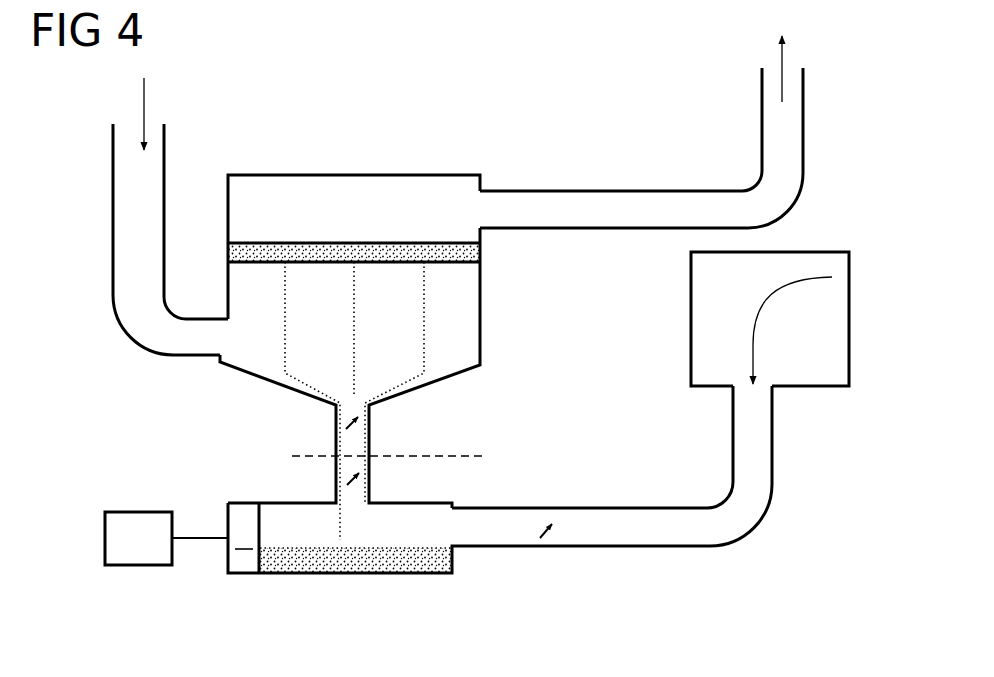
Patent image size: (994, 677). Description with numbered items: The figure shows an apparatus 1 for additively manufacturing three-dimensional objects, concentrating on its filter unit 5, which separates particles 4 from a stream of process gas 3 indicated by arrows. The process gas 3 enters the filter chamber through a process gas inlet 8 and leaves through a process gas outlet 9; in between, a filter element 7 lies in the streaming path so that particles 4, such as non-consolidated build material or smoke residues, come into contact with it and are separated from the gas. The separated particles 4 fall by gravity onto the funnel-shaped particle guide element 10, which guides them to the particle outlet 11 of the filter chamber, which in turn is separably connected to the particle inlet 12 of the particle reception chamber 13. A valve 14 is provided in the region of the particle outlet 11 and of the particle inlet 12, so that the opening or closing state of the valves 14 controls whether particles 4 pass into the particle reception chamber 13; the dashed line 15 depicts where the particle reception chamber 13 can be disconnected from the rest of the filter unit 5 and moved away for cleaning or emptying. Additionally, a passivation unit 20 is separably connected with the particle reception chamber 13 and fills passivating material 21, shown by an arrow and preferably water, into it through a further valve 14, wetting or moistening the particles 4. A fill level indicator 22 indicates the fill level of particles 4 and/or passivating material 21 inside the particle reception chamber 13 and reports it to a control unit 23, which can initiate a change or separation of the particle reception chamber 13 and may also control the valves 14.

The apparatus 1 is at (348, 267).
The process gas 3 is at (144, 100).
The particles 4 is at (283, 357).
The filter unit 5 is at (268, 140).
The filter element 7 is at (480, 250).
The process gas inlet 8 is at (226, 336).
The process gas outlet 9 is at (488, 208).
The particle guide element 10 is at (270, 383).
The particle outlet 11 is at (373, 413).
The particle inlet 12 is at (373, 485).
The particle reception chamber 13 is at (462, 560).
The valve 14 is at (348, 427).
The dashed line 15 is at (486, 456).
The passivation unit 20 is at (850, 322).
The passivating material 21 is at (830, 276).
The fill level indicator 22 is at (250, 575).
The control unit 23 is at (140, 567).